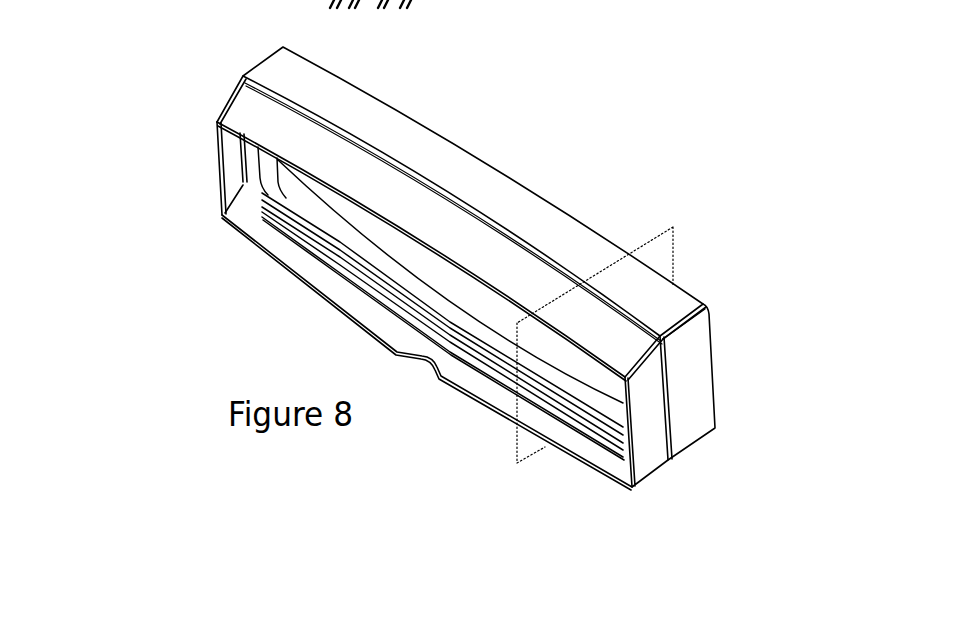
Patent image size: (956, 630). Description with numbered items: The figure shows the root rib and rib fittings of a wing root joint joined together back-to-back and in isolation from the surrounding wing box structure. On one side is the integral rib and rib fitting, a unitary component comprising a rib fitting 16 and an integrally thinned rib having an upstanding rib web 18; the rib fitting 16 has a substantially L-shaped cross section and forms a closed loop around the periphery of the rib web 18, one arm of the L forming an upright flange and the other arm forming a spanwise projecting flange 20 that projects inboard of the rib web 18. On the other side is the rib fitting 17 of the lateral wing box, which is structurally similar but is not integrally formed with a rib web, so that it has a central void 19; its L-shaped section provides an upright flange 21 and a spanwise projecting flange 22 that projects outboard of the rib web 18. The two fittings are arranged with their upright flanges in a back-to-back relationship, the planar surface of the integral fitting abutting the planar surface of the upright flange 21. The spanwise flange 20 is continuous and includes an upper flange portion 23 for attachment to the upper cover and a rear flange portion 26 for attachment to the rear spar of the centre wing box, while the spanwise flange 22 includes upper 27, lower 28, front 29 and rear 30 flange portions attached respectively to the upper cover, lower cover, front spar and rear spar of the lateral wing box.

The rib fitting 16 is at (498, 197).
The rib fitting 17 is at (390, 197).
The rib web 18 is at (413, 246).
The central void 19 is at (303, 207).
The spanwise projecting flange 20 is at (683, 393).
The upright flange 21 is at (252, 179).
The spanwise projecting flange 22 is at (655, 443).
The upper flange portion 23 is at (340, 98).
The rear flange portion 26 is at (693, 423).
The upper flange portion 27 is at (253, 108).
The lower flange portion 28 is at (477, 385).
The front flange portion 29 is at (227, 148).
The rear flange portion 30 is at (645, 403).